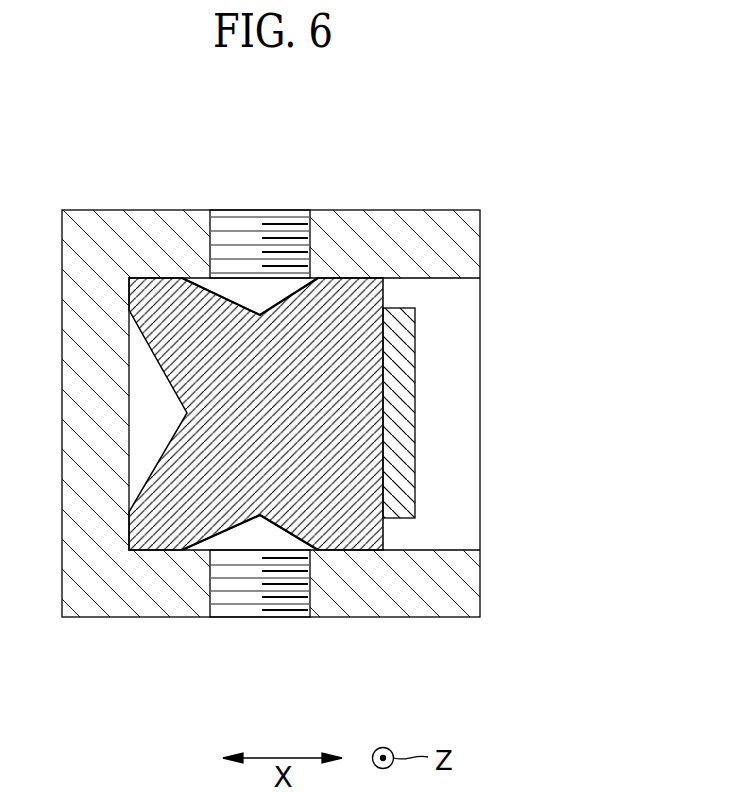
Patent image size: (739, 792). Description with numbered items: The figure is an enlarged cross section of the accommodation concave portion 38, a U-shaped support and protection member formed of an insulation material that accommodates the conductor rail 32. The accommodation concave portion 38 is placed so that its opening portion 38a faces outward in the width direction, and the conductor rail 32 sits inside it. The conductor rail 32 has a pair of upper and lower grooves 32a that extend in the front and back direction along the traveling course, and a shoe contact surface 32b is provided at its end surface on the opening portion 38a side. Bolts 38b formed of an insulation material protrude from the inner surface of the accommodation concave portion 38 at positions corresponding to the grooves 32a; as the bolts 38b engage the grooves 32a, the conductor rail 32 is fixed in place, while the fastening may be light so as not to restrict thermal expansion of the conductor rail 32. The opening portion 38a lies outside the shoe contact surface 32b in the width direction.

The conductor rail 32 is at (180, 278).
The groove 32a is at (320, 278).
The shoe contact surface 32b is at (415, 403).
The accommodation concave portion 38 is at (410, 210).
The opening portion 38a is at (480, 550).
The bolt 38b is at (243, 242).